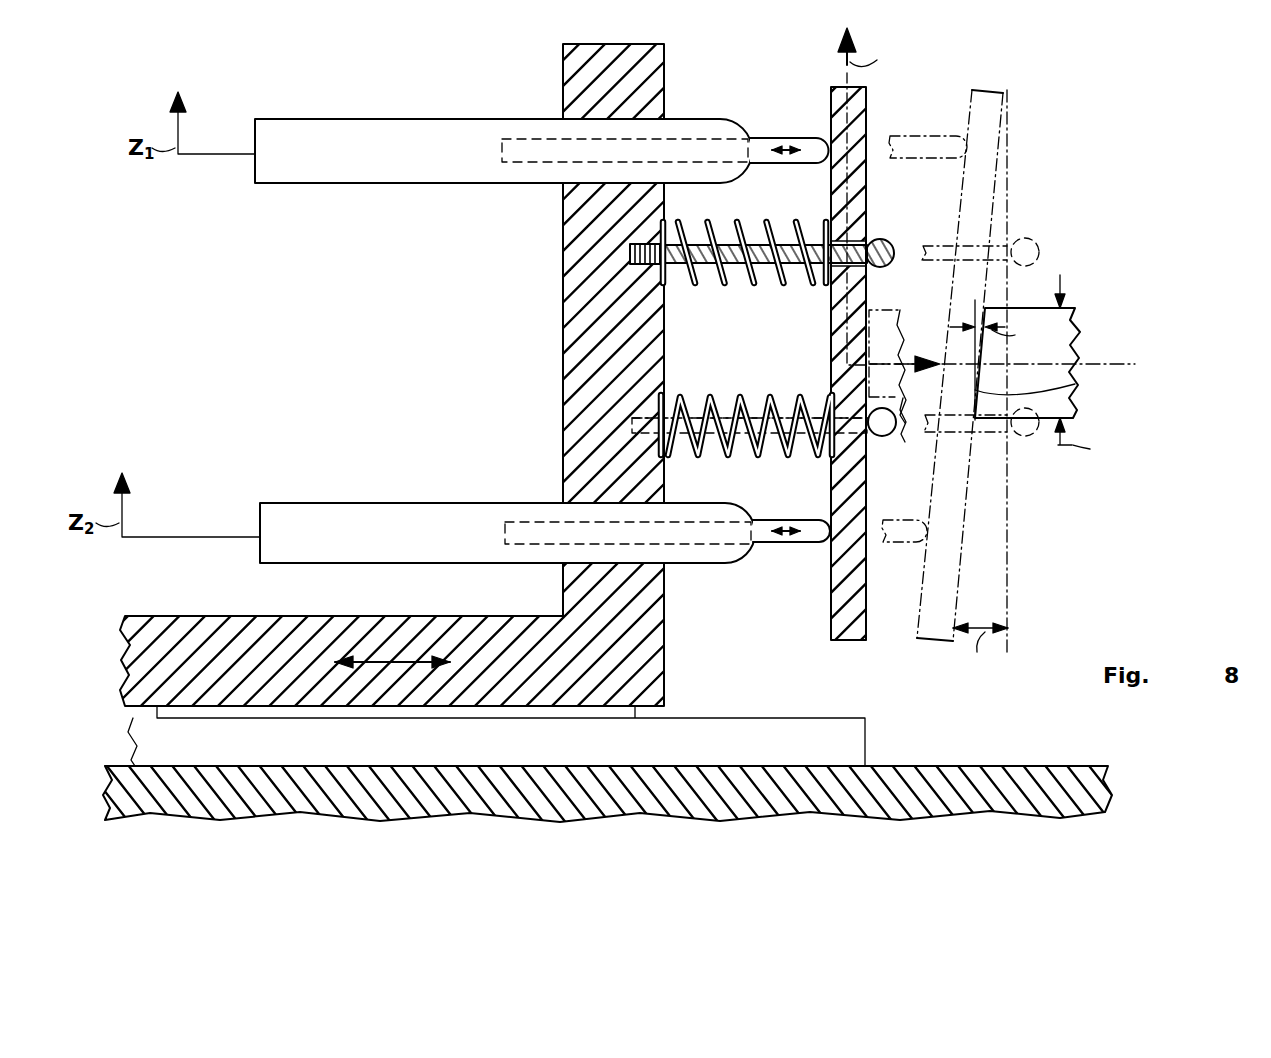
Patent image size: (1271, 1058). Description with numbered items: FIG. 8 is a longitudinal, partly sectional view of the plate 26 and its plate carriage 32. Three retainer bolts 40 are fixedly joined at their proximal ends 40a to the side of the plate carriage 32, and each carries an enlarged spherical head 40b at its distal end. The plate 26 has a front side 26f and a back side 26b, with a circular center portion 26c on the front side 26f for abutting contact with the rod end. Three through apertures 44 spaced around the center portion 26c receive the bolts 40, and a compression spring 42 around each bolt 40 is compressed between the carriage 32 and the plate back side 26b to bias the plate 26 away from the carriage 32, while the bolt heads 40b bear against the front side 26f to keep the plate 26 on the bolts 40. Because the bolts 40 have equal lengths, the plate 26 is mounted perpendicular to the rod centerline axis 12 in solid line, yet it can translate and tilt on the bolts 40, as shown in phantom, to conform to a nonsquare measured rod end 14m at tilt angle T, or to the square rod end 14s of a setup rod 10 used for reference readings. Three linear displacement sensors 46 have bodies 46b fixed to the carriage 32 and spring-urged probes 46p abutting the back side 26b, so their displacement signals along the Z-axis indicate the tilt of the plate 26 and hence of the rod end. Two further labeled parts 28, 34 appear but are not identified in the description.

The rod 10 is at (1082, 305).
The rod centerline axis 12 is at (1115, 362).
The measured rod end 14m is at (1077, 389).
The square rod end 14s is at (903, 432).
The plate 26 is at (1000, 89).
The plate back side 26b is at (833, 615).
The circular center portion 26c is at (868, 300).
The plate front side 26f is at (866, 597).
The base 28 is at (980, 736).
The plate carriage 32 is at (222, 616).
The slide plate 34 is at (652, 711).
The retainer bolts 40 is at (722, 275).
The proximal ends 40a is at (630, 253).
The spherical head 40b is at (890, 240).
The compression springs 42 is at (712, 226).
The through apertures 44 is at (863, 238).
The linear displacement sensors 46 is at (328, 184).
The sensor body 46b is at (443, 184).
The extendable probe 46p is at (780, 137).